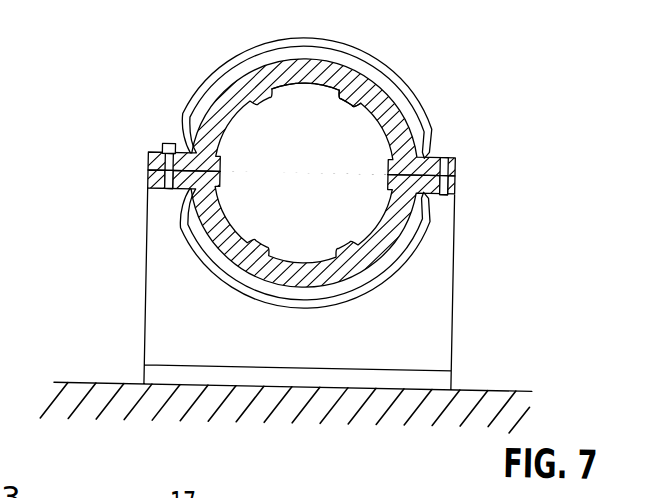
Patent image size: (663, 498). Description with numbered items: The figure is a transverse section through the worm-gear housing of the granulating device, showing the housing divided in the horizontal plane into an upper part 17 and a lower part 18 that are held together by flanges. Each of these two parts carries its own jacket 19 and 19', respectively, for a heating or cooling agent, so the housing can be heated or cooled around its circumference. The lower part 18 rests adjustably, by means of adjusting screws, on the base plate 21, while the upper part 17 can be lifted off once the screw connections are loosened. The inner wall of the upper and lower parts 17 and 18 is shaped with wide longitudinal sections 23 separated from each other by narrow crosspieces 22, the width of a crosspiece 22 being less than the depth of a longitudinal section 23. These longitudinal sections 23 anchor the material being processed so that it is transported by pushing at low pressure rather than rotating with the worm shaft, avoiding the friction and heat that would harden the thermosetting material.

The upper part of the worm-gear housing 17 is at (387, 97).
The lower part of the worm-gear housing 18 is at (403, 228).
The jacket 19 is at (311, 79).
The jacket 19' is at (304, 271).
The base plate 21 is at (447, 377).
The crosspiece 22 is at (352, 92).
The longitudinal section 23 is at (320, 92).